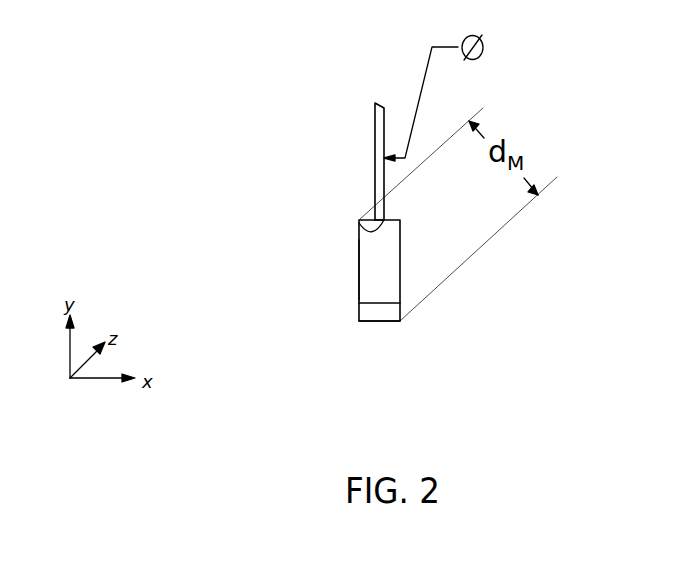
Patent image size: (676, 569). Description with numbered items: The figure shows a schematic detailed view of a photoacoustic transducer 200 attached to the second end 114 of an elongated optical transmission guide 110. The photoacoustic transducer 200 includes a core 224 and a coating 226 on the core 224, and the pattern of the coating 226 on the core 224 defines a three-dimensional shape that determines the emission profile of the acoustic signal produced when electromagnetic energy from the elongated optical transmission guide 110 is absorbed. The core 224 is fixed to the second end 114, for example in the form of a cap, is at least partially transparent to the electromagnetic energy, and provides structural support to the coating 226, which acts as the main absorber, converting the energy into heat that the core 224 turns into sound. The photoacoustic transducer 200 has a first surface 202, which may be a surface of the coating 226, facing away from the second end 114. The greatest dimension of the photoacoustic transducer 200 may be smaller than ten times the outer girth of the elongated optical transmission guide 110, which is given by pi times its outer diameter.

The elongated optical transmission guide 110 is at (375, 120).
The second end 114 is at (359, 223).
The photoacoustic transducer 200 is at (405, 223).
The first surface 202 is at (383, 321).
The core 224 is at (364, 262).
The coating 226 is at (359, 315).